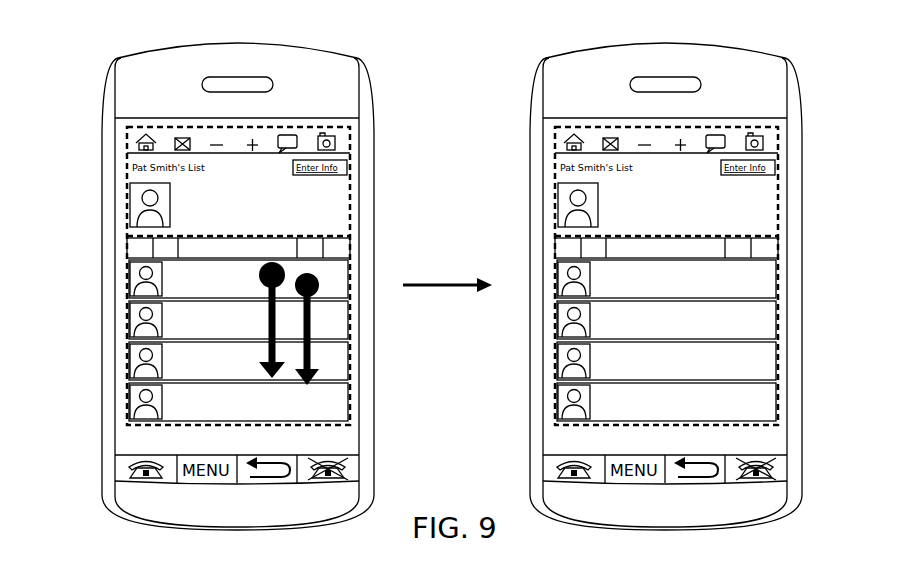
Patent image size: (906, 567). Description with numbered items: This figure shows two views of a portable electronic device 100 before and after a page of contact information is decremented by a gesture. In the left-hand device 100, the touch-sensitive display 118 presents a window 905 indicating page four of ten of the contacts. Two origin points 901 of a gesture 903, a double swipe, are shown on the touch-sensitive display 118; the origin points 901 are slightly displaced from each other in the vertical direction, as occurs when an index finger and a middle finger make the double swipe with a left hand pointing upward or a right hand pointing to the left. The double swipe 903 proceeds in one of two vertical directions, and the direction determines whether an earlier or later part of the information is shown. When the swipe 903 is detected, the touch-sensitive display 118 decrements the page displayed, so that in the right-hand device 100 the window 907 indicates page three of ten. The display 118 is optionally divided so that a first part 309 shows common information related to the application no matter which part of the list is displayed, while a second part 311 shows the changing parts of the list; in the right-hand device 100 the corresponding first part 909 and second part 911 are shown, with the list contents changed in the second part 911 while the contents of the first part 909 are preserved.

The portable electronic device 100 is at (375, 92).
The touch-sensitive display 118 is at (127, 170).
The first part of the display 309 is at (326, 129).
The window 905 is at (289, 238).
The origin points 901 is at (283, 281).
The gesture / double swipe 903 is at (277, 305).
The second part of the display 311 is at (327, 422).
The icon toolbar 909 is at (758, 138).
The page navigation bar 907 is at (716, 238).
The contact list 911 is at (750, 422).